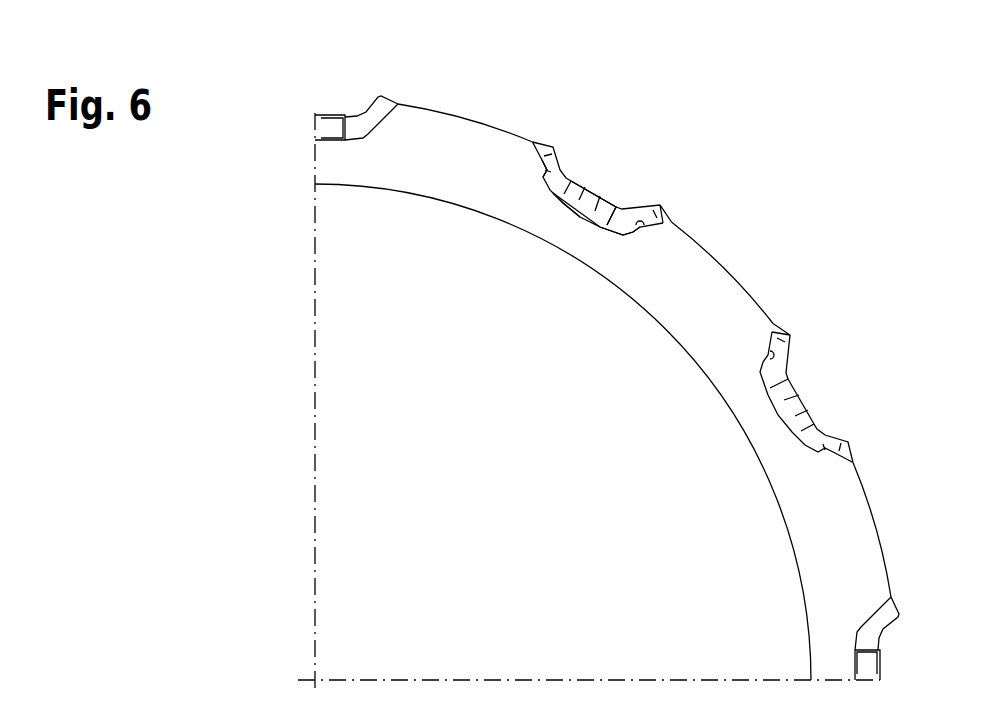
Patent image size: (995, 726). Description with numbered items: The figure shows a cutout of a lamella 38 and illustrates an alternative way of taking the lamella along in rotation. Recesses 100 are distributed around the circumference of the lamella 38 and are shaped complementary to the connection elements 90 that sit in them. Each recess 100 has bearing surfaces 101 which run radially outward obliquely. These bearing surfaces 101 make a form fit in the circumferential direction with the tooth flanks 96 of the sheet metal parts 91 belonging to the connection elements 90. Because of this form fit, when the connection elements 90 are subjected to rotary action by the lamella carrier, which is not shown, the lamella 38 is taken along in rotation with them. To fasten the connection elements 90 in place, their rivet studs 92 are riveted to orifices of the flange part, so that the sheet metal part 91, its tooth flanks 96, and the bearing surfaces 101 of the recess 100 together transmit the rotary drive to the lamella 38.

The lamella 38 is at (722, 275).
The connection element 90 is at (620, 182).
The sheet metal part 91 is at (577, 213).
The rivet stud 92 is at (584, 176).
The tooth flank 96 is at (556, 147).
The recess 100 is at (553, 193).
The bearing surface 101 is at (547, 167).